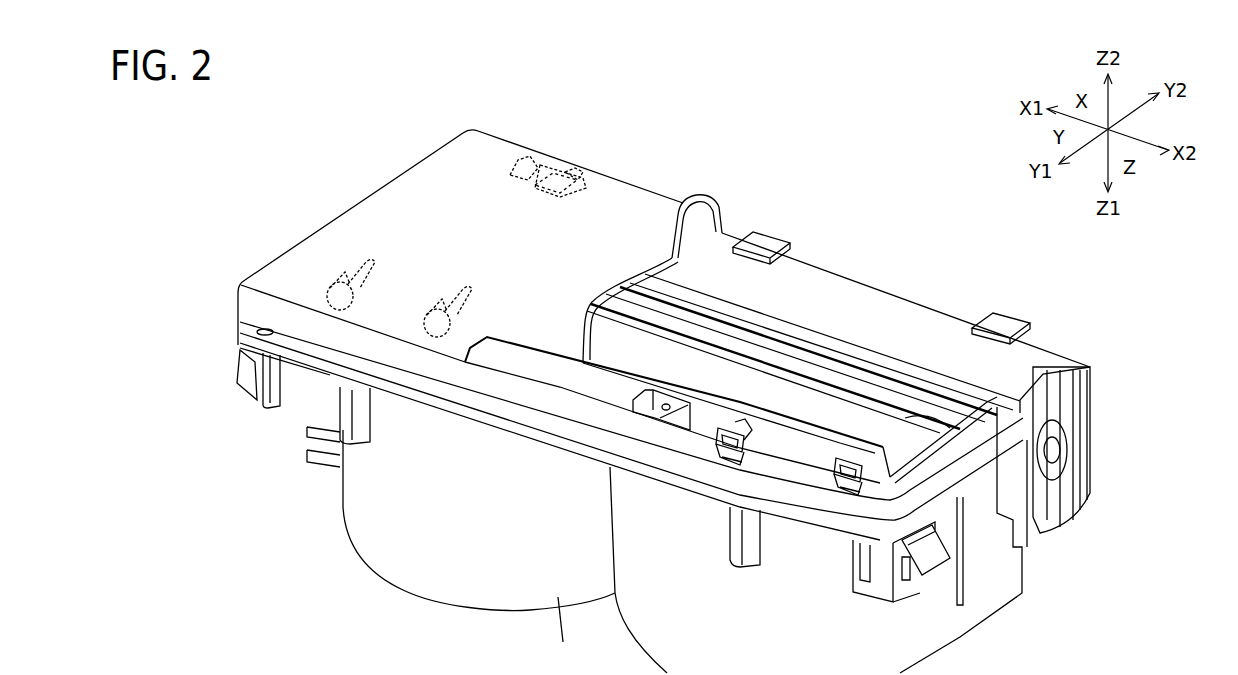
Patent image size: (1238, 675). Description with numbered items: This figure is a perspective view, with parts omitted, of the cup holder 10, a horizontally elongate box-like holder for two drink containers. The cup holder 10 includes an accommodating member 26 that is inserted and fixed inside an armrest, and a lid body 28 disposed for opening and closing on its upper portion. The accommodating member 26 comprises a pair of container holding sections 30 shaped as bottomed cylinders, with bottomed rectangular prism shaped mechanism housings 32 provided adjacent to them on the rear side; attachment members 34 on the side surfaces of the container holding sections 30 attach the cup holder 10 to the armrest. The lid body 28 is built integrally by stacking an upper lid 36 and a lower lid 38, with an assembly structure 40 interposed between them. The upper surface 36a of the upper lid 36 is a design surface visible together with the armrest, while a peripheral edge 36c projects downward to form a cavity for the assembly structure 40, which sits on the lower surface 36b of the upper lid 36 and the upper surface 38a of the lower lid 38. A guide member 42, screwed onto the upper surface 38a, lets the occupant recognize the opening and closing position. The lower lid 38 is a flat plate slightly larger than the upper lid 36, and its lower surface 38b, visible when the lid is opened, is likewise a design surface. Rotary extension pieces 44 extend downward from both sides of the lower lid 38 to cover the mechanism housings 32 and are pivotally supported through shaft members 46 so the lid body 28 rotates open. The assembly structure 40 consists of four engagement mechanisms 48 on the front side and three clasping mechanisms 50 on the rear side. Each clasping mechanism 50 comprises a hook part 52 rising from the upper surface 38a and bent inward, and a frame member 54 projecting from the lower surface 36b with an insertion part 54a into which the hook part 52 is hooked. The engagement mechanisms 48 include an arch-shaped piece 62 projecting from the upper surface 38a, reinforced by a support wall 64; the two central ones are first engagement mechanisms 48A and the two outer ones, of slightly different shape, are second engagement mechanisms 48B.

The cup holder 10 is at (373, 76).
The accommodating member 26 is at (330, 528).
The lid body 28 is at (240, 229).
The container holding sections 30 is at (630, 640).
The mechanism housings 32 is at (1003, 572).
The attachment members 34 is at (297, 403).
The upper lid 36 is at (664, 262).
The upper surface of the upper lid 36a is at (463, 147).
The lower surface of the upper lid 36b is at (677, 257).
The peripheral edge of the upper lid 36c is at (723, 213).
The lower lid 38 is at (790, 388).
The upper surface of the lower lid 38a is at (810, 367).
The lower surface of the lower lid 38b is at (850, 400).
The assembly structure 40 is at (1064, 318).
The guide member 42 is at (528, 357).
The rotary extension pieces 44 is at (1079, 450).
The shaft members 46 is at (1057, 450).
The engagement mechanisms 48 is at (594, 397).
The first engagement mechanisms 48A is at (672, 502).
The second engagement mechanisms 48B is at (813, 557).
The clasping mechanisms 50 is at (573, 156).
The hook parts 52 is at (768, 232).
The frame members 54 is at (573, 156).
The insertion parts 54a is at (540, 147).
The arch-shaped piece 62 is at (740, 432).
The support wall 64 is at (750, 397).